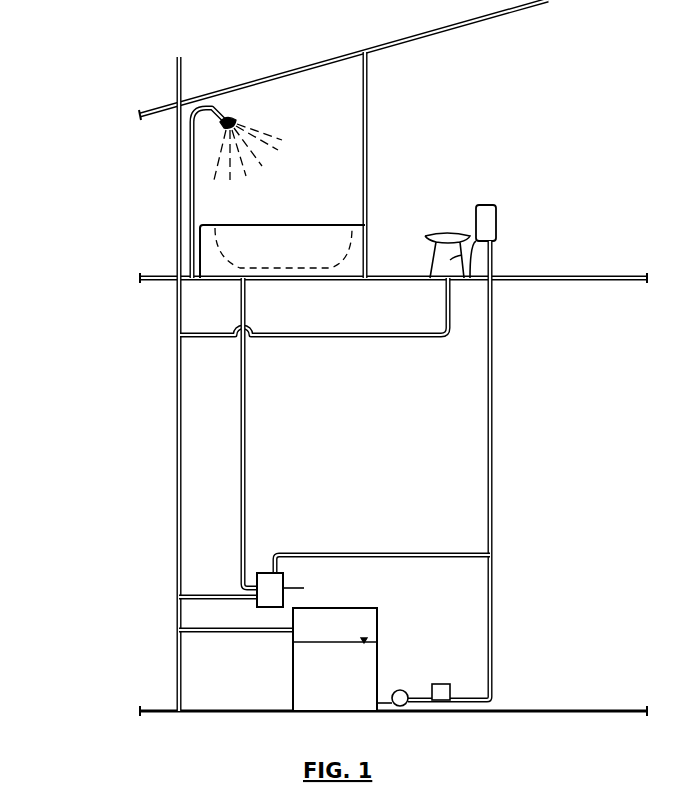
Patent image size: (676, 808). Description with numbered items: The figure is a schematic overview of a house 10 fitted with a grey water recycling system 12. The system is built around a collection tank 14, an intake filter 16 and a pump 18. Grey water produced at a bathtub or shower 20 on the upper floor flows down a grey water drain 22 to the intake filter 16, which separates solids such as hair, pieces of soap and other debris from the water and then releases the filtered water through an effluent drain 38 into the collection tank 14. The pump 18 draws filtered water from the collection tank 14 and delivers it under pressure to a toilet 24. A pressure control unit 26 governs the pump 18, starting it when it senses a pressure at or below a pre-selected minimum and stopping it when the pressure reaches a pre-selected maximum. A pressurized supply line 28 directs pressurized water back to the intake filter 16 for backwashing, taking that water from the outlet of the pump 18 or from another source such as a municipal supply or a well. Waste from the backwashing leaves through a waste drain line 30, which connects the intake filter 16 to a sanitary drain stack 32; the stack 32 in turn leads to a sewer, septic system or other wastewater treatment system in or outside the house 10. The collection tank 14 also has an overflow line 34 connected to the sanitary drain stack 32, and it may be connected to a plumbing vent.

The house 10 is at (74, 461).
The grey water recycling system 12 is at (274, 651).
The collection tank 14 is at (378, 655).
The intake filter 16 is at (266, 573).
The pump 18 is at (405, 690).
The bathtub or shower 20 is at (387, 130).
The grey water drain 22 is at (246, 453).
The toilet 24 is at (496, 218).
The pressure control unit 26 is at (445, 684).
The pressurized supply line 28 is at (387, 555).
The waste drain line 30 is at (205, 597).
The sanitary drain stack 32 is at (177, 510).
The overflow line 34 is at (242, 630).
The effluent drain 38 is at (312, 607).